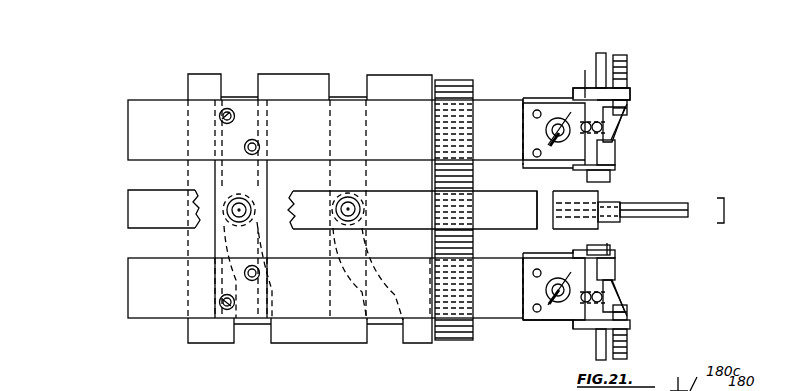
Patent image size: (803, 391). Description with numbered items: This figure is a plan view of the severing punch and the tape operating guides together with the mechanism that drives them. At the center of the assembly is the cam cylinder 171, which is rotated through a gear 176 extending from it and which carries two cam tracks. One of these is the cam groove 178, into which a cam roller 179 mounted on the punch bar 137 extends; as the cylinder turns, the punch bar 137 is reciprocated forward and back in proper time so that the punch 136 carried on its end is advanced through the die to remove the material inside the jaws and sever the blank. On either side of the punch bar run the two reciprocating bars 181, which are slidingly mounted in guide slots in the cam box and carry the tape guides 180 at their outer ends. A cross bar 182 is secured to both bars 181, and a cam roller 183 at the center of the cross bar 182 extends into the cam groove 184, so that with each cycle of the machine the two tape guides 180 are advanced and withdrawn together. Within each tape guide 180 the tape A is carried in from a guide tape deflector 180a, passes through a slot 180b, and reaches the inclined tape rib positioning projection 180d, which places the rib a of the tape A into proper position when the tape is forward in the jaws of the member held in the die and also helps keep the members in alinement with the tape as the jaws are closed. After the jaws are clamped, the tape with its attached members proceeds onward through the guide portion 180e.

The reciprocating bars 181 is at (135, 157).
The cross bar 182 is at (218, 239).
The cam roller 183 is at (252, 206).
The cam roller 179 is at (360, 203).
The punch bar 137 is at (530, 200).
The punch 136 is at (661, 198).
The cam groove 184 is at (255, 332).
The cam groove 178 is at (388, 333).
The cam cylinder 171 is at (425, 338).
The gear 176 is at (457, 338).
The tape guides 180 is at (584, 342).
The guide tape deflector 180a is at (616, 167).
The slot 180b is at (615, 152).
The inclined tape rib positioning projection 180d is at (606, 124).
The guide portion 180e is at (629, 95).
The rib a is at (628, 60).
The tape A is at (603, 55).